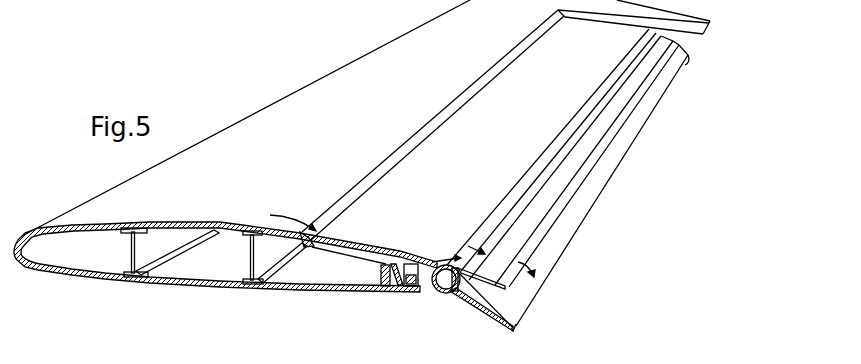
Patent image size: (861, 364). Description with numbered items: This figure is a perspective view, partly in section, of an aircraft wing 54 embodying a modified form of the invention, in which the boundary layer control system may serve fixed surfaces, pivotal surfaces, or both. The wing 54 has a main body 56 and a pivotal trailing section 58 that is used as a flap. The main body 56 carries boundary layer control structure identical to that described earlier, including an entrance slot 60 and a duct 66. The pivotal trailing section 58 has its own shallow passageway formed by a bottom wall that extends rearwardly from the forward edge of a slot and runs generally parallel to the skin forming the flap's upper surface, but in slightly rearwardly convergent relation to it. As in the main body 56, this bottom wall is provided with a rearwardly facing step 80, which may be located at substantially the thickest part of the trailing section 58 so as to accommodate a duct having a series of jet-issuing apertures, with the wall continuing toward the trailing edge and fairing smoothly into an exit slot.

The wing 54 is at (113, 189).
The main body 56 is at (313, 87).
The entrance slot 60 is at (374, 176).
The duct 66 is at (381, 272).
The pivotal trailing section 58 is at (468, 309).
The rearwardly facing step 80 is at (521, 281).